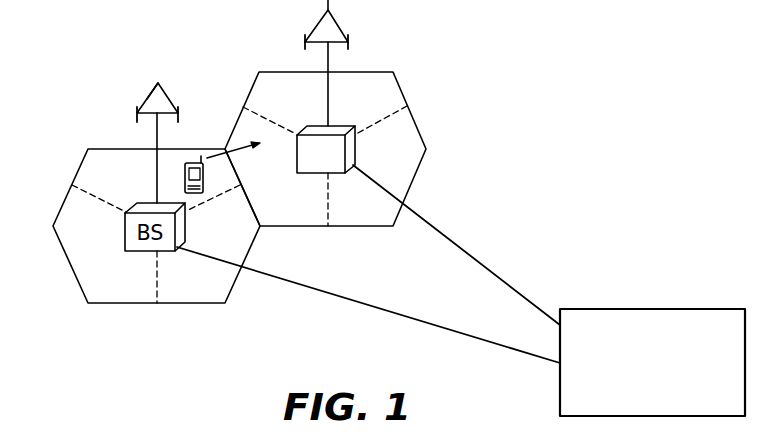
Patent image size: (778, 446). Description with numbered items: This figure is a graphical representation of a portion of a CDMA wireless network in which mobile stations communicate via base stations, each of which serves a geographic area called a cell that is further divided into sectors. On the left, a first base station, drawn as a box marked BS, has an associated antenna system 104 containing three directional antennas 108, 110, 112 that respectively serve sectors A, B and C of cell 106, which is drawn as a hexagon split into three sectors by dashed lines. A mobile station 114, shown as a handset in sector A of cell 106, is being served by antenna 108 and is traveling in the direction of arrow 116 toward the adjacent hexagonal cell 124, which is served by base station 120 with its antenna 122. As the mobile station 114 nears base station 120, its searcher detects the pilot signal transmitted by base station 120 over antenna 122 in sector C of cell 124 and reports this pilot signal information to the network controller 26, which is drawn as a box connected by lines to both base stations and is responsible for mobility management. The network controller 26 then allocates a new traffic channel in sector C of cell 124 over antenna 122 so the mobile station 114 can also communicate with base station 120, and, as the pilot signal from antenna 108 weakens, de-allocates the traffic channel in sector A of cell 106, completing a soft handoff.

The network controller 26 is at (655, 308).
The antenna system 104 is at (147, 102).
The cell 106 is at (70, 267).
The directional antenna 108 is at (158, 83).
The directional antenna 110 is at (178, 110).
The directional antenna 112 is at (135, 117).
The mobile station 114 is at (203, 185).
The arrow 116 is at (237, 148).
The base station 120 is at (333, 176).
The antenna 122 is at (305, 42).
The cell 124 is at (418, 130).